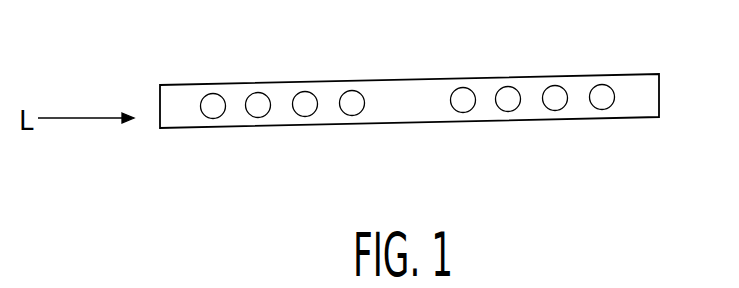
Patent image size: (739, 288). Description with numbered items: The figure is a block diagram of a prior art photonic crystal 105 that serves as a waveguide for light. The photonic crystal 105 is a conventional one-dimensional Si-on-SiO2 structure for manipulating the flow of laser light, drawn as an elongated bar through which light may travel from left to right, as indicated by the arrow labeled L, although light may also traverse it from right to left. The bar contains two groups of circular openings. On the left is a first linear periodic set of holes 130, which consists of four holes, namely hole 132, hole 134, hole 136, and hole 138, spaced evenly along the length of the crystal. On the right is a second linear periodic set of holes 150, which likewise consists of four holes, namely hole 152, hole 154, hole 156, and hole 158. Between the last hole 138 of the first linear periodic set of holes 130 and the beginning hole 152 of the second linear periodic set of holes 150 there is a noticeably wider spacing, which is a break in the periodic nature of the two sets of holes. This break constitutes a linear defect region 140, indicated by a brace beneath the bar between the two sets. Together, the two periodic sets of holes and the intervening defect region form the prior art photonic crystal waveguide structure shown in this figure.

The photonic crystal 105 is at (159, 92).
The first linear periodic set of holes 130 is at (362, 68).
The hole 132 is at (204, 115).
The hole 134 is at (248, 114).
The hole 136 is at (297, 114).
The last hole 138 is at (345, 113).
The linear defect region 140 is at (453, 131).
The second linear periodic set of holes 150 is at (613, 62).
The beginning hole 152 is at (470, 110).
The hole 154 is at (514, 109).
The hole 156 is at (566, 103).
The hole 158 is at (614, 101).